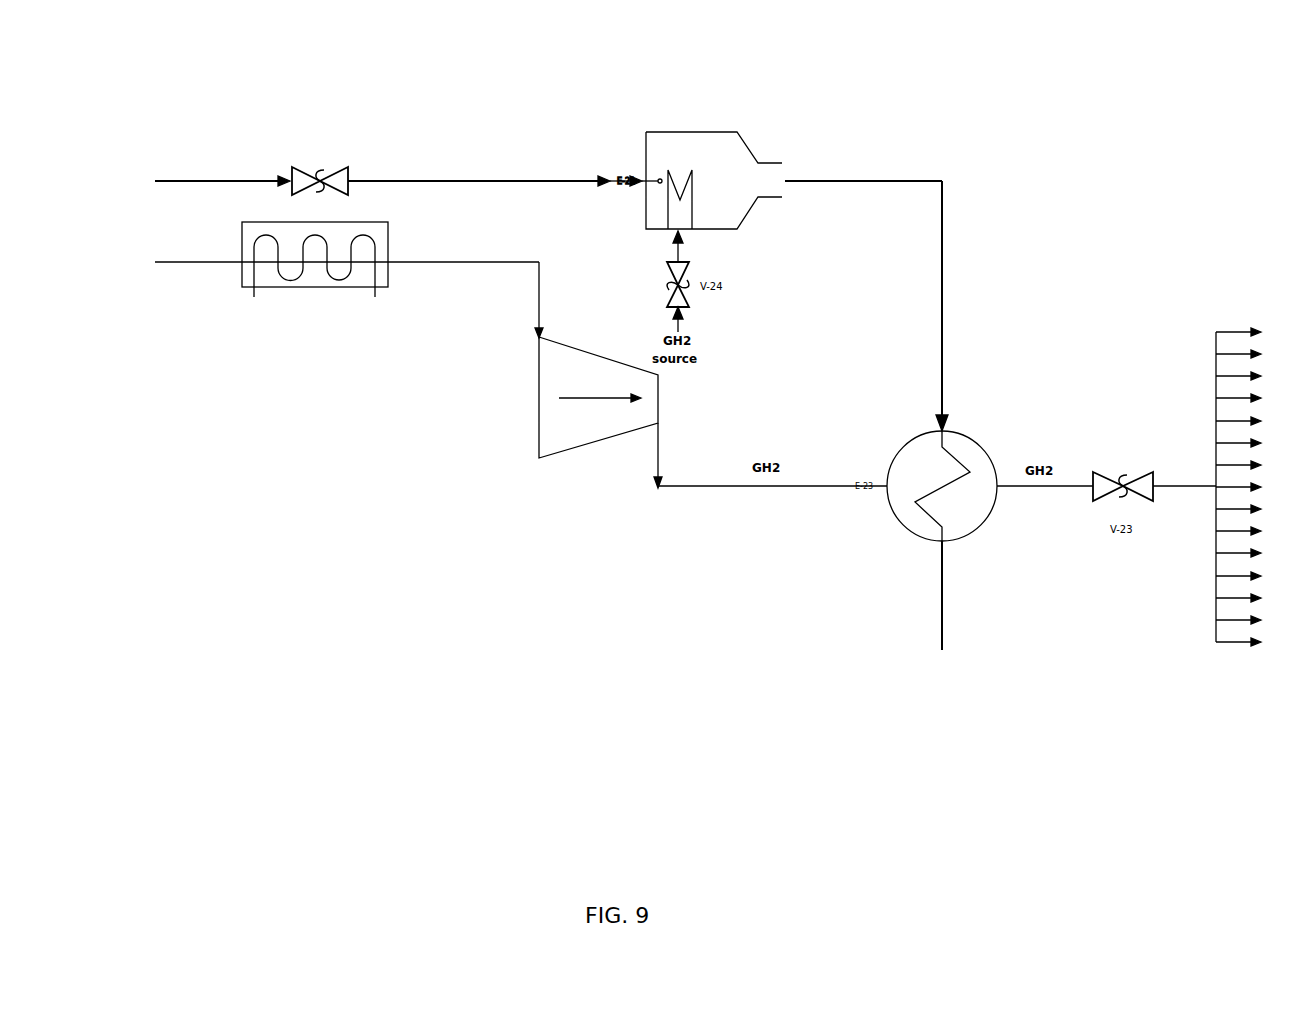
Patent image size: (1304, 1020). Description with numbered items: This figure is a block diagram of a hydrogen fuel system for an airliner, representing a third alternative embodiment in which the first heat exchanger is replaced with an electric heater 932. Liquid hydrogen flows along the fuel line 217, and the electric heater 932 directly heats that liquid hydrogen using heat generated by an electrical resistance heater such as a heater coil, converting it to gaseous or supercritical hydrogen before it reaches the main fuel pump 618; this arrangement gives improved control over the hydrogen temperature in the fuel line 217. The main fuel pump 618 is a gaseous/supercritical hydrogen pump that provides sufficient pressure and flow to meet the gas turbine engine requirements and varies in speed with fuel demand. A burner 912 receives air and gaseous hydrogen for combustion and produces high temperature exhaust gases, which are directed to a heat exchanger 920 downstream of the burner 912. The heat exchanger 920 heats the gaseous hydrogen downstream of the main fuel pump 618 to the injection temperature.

The fuel line 217 is at (202, 262).
The electric heater 932 is at (337, 287).
The main fuel pump 618 is at (563, 450).
The burner 912 is at (695, 130).
The heat exchanger 920 is at (980, 442).